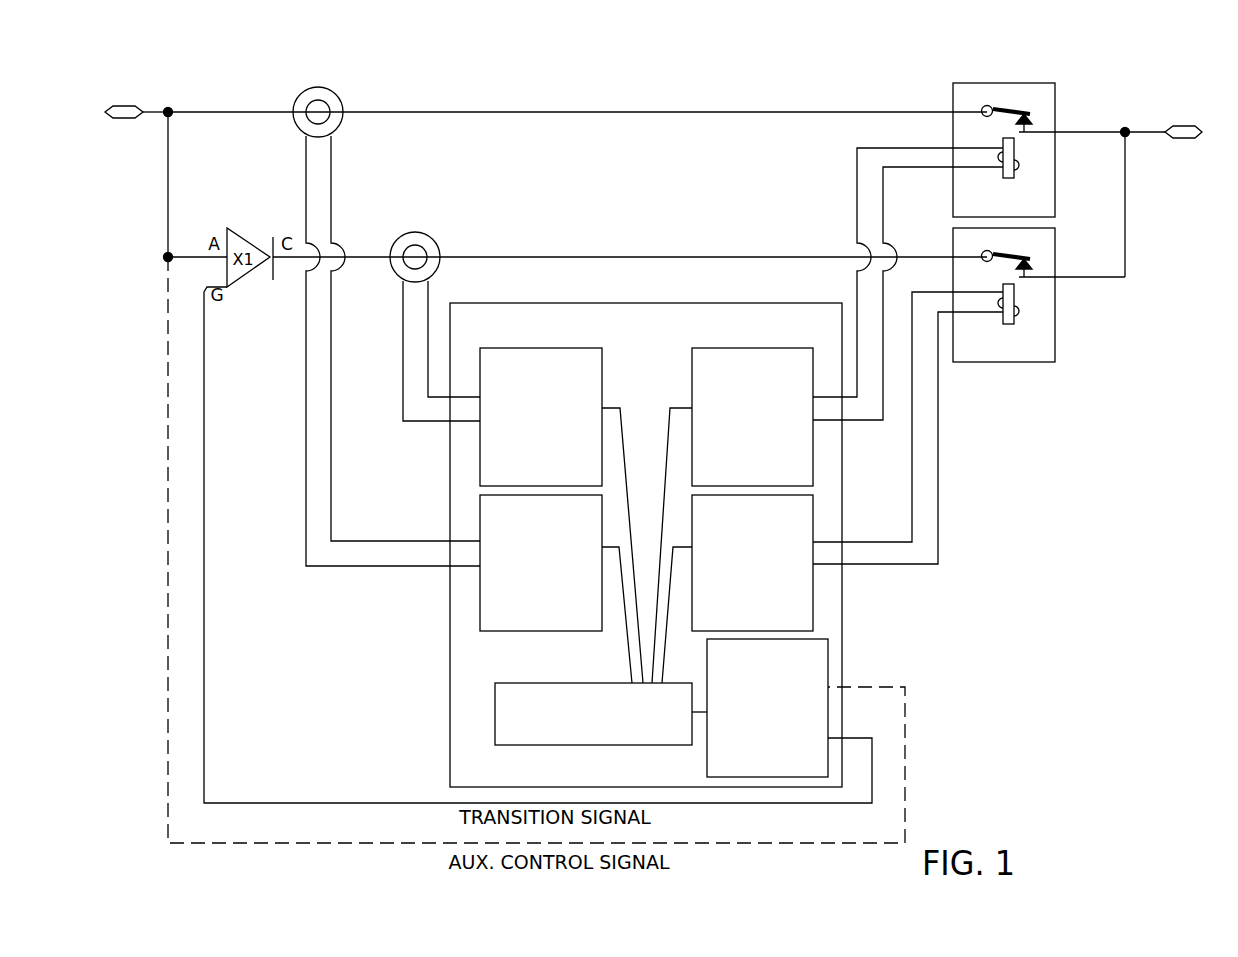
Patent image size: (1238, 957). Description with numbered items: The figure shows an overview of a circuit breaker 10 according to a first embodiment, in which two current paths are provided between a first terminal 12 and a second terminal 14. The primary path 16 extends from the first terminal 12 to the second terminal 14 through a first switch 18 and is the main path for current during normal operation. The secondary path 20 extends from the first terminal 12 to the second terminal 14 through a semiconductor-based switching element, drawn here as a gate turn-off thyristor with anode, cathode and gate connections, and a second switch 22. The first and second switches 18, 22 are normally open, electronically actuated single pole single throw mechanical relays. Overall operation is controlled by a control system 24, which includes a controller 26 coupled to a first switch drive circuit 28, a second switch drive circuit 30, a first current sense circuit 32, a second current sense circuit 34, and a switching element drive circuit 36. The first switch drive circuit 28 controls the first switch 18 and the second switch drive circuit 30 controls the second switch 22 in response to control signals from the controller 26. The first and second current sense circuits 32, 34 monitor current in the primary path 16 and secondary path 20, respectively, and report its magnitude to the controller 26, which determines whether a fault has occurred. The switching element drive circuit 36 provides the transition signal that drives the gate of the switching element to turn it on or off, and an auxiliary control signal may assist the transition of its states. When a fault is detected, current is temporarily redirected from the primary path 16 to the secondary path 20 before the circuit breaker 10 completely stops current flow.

The circuit breaker 10 is at (716, 88).
The first terminal 12 is at (129, 100).
The second terminal 14 is at (1169, 121).
The primary path 16 is at (577, 126).
The first switch 18 is at (1039, 150).
The secondary path 20 is at (630, 271).
The second switch 22 is at (1039, 295).
The control system 24 is at (646, 545).
The controller 26 is at (593, 716).
The first switch drive circuit 28 is at (752, 417).
The second switch drive circuit 30 is at (752, 563).
The first current sense circuit 32 is at (541, 417).
The second current sense circuit 34 is at (541, 563).
The switching element drive circuit 36 is at (767, 708).